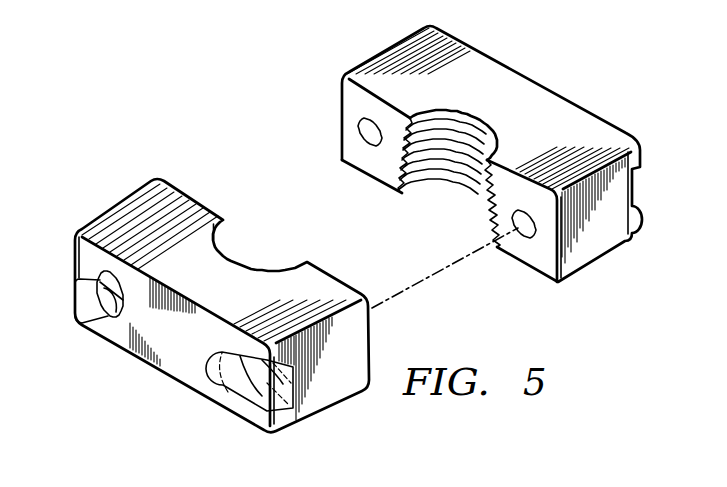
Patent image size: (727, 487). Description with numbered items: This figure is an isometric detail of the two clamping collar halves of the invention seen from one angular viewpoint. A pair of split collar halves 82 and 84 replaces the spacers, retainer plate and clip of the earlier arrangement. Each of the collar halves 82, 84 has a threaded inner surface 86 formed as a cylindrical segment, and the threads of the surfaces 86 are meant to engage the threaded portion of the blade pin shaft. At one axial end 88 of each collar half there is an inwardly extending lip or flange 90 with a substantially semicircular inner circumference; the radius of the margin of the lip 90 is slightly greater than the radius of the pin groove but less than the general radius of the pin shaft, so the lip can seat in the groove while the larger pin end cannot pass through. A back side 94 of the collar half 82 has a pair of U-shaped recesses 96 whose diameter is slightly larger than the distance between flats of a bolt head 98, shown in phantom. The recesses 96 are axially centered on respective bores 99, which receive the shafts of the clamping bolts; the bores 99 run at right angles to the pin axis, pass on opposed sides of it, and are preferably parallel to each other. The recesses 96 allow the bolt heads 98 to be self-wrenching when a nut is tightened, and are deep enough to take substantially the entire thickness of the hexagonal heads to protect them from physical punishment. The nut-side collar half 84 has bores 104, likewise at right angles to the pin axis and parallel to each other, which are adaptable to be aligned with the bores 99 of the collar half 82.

The collar half 82 is at (328, 284).
The collar half 84 is at (547, 94).
The threaded inner surface 86 is at (446, 180).
The axial end 88 is at (548, 141).
The inwardly extending lip 90 is at (452, 116).
The back side 94 is at (185, 371).
The U-shaped recess 96 is at (79, 274).
The bolt head 98 is at (228, 391).
The bore 99 is at (97, 322).
The bore 104 is at (362, 135).